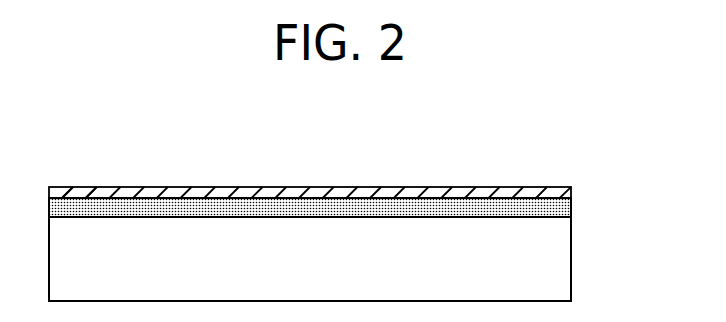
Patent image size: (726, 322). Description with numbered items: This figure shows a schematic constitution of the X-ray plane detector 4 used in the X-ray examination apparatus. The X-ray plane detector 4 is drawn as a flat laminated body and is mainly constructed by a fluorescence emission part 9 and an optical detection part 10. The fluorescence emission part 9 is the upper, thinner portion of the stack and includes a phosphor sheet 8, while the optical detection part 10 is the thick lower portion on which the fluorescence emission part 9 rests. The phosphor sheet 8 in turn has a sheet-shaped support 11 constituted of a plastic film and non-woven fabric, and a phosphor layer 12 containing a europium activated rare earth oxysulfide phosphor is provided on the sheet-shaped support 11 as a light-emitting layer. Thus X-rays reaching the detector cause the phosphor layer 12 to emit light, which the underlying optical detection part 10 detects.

The X-ray plane detector 4 is at (443, 163).
The phosphor sheet 8 is at (240, 127).
The fluorescence emission part 9 is at (592, 187).
The optical detection part 10 is at (592, 217).
The sheet-shaped support 11 is at (183, 197).
The phosphor layer 12 is at (220, 212).